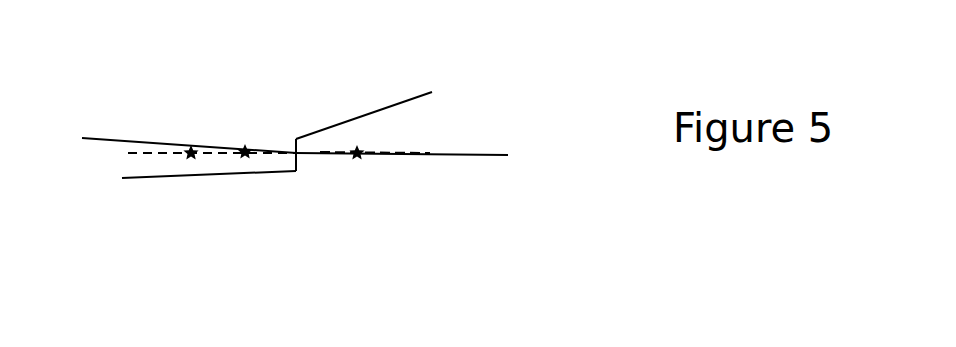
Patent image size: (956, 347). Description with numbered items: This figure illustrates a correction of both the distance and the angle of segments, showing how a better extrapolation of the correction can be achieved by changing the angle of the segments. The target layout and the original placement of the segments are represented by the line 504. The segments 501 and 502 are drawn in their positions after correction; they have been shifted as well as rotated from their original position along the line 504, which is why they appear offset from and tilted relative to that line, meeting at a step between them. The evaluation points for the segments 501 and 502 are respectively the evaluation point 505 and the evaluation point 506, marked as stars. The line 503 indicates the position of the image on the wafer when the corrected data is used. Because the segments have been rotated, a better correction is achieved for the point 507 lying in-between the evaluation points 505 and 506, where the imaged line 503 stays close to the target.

The segment 501 is at (208, 177).
The segment 502 is at (373, 108).
The line 503 is at (465, 152).
The line 504 is at (127, 155).
The evaluation point 505 is at (187, 163).
The evaluation point 506 is at (363, 162).
The point 507 is at (244, 145).